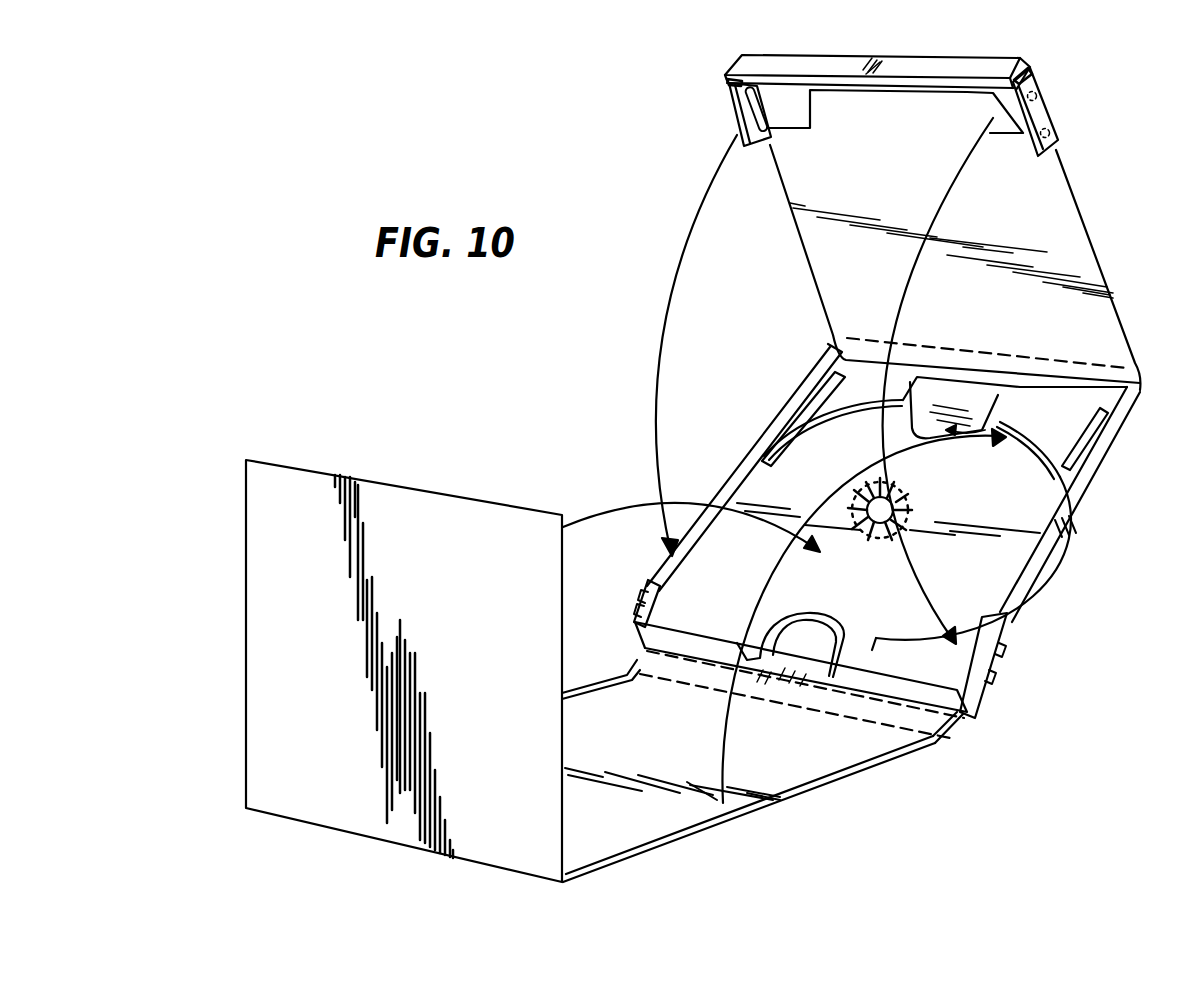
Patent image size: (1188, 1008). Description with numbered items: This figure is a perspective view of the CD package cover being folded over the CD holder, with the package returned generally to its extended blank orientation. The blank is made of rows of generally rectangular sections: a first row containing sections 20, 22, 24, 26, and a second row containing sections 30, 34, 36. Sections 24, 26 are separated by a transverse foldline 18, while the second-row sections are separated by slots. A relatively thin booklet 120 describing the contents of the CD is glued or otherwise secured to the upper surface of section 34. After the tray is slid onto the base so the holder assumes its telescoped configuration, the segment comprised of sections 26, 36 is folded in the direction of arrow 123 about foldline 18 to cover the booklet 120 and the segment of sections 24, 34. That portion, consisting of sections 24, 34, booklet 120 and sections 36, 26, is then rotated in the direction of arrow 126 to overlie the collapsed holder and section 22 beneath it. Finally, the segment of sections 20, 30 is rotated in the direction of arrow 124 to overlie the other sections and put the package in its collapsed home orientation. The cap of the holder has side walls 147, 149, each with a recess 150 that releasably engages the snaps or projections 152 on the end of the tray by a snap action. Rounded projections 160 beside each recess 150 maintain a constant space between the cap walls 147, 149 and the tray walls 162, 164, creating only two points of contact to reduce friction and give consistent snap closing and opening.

The transverse foldline 18 is at (605, 882).
The section 20 is at (1065, 190).
The section 22 is at (997, 560).
The section 24 is at (700, 832).
The section 26 is at (265, 738).
The section 30 is at (1135, 325).
The section 34 is at (787, 800).
The section 36 is at (563, 740).
The booklet 120 is at (866, 742).
The arrow 123 is at (704, 467).
The arrow 124 is at (824, 381).
The arrow 126 is at (801, 651).
The side wall of the cap 147 is at (735, 108).
The side wall of the cap 149 is at (1043, 98).
The recess 150 is at (765, 106).
The snaps or projections 152 is at (655, 587).
The rounded projections 160 is at (728, 90).
The wall of the tray 162 is at (1003, 645).
The wall of the tray 164 is at (638, 613).